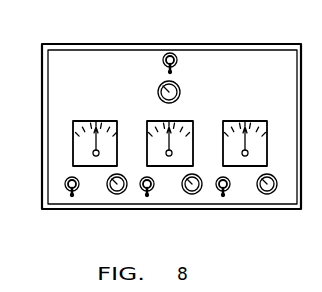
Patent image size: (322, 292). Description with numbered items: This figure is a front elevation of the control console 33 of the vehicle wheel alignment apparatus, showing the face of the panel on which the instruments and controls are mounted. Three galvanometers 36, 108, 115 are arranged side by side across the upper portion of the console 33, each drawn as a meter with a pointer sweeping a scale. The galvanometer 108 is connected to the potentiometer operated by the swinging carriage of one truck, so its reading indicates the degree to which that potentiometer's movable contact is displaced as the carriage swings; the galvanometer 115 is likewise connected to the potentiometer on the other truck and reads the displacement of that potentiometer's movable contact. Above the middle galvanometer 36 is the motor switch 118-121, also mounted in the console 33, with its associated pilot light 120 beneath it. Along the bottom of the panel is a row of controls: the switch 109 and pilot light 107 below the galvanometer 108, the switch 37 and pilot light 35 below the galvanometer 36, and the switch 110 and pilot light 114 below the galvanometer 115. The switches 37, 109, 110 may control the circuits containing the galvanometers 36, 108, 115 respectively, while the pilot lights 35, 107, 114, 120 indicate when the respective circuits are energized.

The console 33 is at (232, 44).
The galvanometer 108 is at (77, 128).
The galvanometer 36 is at (184, 126).
The galvanometer 115 is at (230, 128).
The motor switch 118-121 is at (177, 63).
The pilot light 120 is at (160, 86).
The switch 109 is at (72, 196).
The pilot light 107 is at (115, 194).
The switch 37 is at (147, 196).
The pilot light 35 is at (191, 194).
The switch 110 is at (223, 196).
The pilot light 114 is at (267, 194).